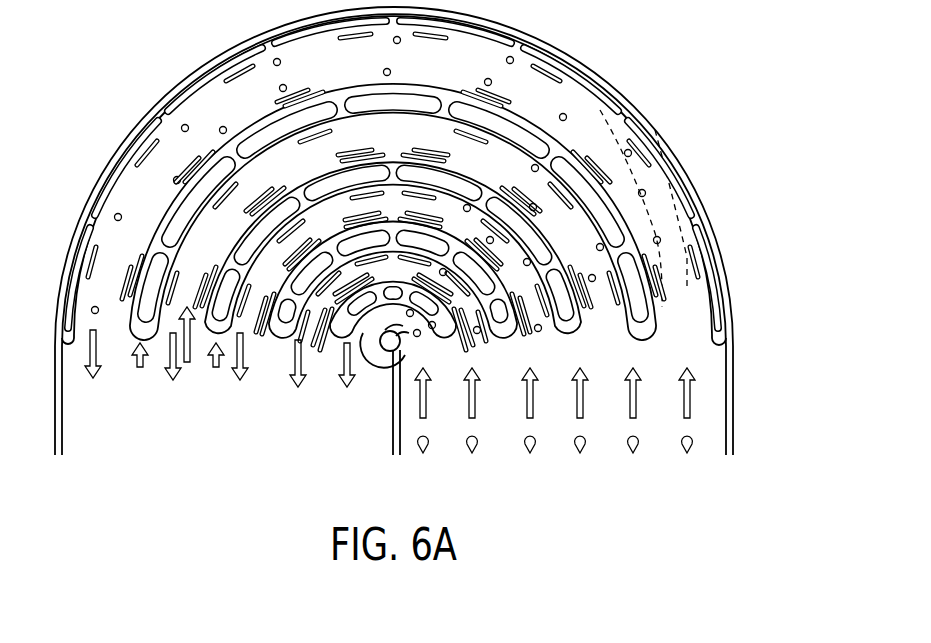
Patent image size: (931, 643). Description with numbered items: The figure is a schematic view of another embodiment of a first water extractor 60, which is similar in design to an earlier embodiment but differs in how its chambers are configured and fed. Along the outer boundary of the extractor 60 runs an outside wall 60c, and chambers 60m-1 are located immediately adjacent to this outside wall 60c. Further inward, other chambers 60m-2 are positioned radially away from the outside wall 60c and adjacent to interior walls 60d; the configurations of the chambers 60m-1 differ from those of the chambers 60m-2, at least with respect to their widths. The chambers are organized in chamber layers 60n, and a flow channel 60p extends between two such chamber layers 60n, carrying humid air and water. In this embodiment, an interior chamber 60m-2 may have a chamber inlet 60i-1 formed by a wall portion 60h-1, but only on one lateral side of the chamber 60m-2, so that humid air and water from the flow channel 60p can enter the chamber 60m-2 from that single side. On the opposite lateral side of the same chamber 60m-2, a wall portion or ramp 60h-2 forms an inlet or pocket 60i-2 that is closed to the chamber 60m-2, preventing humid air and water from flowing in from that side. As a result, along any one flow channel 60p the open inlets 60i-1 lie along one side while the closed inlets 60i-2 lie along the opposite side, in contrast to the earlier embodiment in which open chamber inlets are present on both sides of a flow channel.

The first water extractor 60 is at (706, 123).
The outside wall 60c is at (731, 344).
The interior wall 60d is at (657, 322).
The wall portion 60h-1 is at (623, 325).
The wall portion or ramp 60h-2 is at (650, 280).
The chamber inlet 60i-1 is at (630, 338).
The inlet or pocket 60i-2 is at (654, 268).
The chambers 60m-1 is at (710, 283).
The chambers 60m-2 is at (658, 325).
The chamber layers 60n is at (140, 367).
The flow channel 60p is at (187, 362).